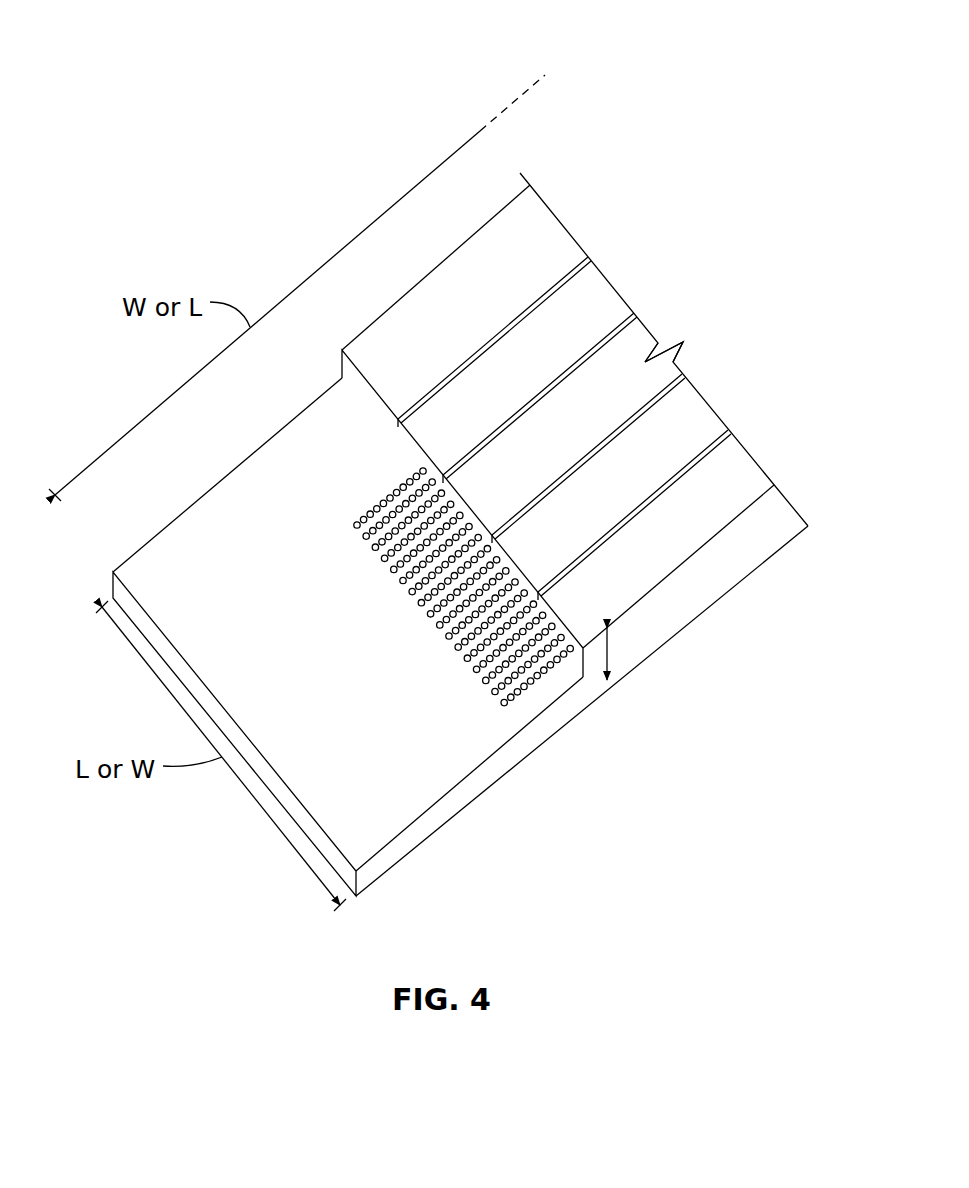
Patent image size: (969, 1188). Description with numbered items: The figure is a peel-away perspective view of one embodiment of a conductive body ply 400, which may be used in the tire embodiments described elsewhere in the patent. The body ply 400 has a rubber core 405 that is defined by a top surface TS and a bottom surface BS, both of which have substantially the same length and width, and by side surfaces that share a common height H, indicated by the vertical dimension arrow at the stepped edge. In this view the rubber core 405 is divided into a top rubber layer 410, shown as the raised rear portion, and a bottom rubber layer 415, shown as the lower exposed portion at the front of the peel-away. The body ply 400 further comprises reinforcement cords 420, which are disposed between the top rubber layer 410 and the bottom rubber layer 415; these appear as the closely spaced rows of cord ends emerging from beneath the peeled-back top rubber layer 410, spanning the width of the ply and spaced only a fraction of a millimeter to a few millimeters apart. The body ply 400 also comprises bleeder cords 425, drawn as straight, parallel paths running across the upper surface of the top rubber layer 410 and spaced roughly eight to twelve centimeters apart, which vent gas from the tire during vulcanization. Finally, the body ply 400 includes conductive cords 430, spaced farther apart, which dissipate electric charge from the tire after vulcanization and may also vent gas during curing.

The conductive body ply 400 is at (150, 98).
The rubber core 405 is at (753, 520).
The top rubber layer 410 is at (338, 367).
The bottom rubber layer 415 is at (293, 452).
The reinforcement cords 420 is at (533, 690).
The bleeder cords 425 is at (570, 265).
The conductive cords 430 is at (673, 372).
The top surface TS is at (745, 478).
The bottom surface BS is at (712, 592).
The height H is at (610, 653).